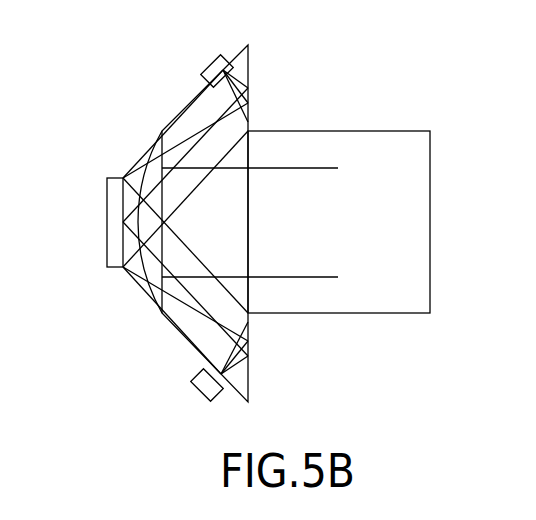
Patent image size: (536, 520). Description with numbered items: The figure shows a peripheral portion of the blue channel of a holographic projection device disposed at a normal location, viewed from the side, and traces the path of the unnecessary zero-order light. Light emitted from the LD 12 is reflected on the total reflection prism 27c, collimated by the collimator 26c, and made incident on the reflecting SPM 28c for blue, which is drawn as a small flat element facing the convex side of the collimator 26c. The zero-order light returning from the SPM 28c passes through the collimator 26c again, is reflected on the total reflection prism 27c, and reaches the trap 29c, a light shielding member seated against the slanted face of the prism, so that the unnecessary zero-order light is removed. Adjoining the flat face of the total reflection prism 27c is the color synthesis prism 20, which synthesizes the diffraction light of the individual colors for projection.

The LD 12 is at (196, 398).
The color synthesis prism 20 is at (381, 131).
The collimator 26c is at (149, 284).
The total reflection prism 27c is at (183, 110).
The SPM 28c is at (107, 218).
The trap 29c is at (207, 57).